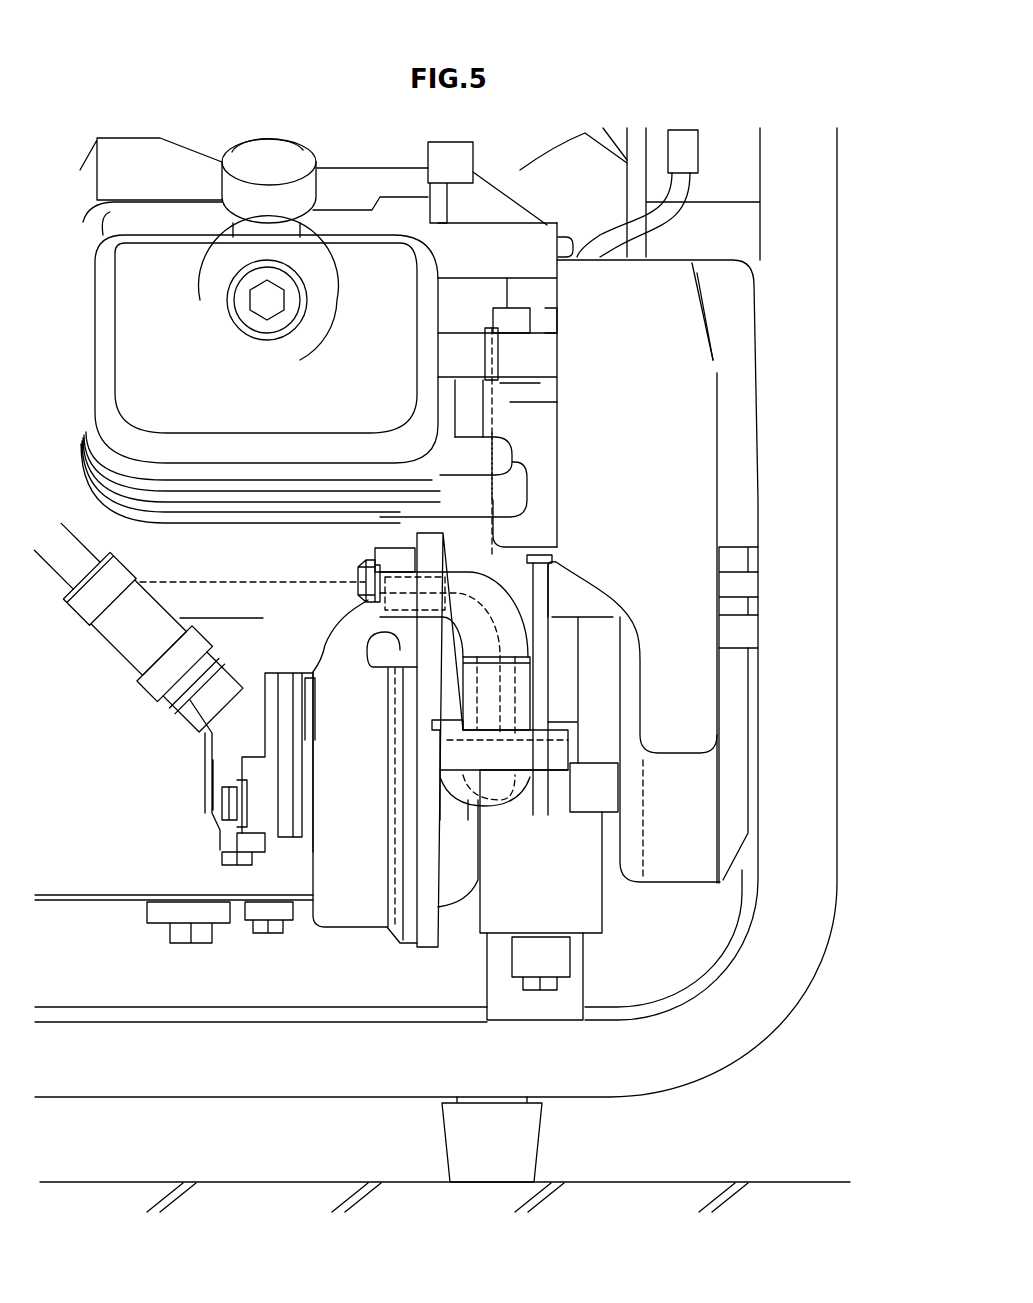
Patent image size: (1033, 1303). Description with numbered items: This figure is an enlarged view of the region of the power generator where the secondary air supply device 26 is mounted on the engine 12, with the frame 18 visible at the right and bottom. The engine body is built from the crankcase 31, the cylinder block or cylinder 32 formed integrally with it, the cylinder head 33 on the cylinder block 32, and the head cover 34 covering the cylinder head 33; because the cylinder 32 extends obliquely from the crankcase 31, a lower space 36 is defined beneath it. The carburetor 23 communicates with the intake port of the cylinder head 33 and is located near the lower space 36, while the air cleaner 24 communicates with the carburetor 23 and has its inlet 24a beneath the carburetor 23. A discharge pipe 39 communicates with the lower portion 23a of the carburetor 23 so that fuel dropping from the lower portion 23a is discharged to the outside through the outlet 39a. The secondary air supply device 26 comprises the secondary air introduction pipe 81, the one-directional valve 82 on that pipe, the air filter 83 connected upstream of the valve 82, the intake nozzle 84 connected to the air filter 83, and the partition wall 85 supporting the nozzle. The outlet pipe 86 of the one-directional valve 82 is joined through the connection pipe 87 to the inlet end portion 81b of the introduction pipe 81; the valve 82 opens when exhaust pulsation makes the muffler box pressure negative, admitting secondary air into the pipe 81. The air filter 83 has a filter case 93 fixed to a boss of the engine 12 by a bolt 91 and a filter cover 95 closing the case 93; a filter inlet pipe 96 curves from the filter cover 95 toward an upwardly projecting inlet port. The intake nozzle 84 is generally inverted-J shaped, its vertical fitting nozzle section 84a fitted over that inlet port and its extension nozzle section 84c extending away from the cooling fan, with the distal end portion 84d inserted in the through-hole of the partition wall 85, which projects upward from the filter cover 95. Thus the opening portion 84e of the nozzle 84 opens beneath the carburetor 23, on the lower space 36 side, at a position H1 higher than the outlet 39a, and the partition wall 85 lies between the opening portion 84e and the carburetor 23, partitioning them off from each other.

The engine 12 is at (716, 237).
The frame 18 is at (817, 587).
The carburetor 23 is at (545, 458).
The lower portion 23a is at (560, 545).
The air cleaner 24 is at (703, 778).
The inlet 24a is at (585, 802).
The secondary air supply device 26 is at (550, 622).
The crankcase 31 is at (240, 648).
The cylinder block 32 is at (257, 517).
The cylinder head 33 is at (447, 420).
The head cover 34 is at (363, 252).
The lower space 36 is at (235, 614).
The discharge pipe 39 is at (548, 650).
The outlet 39a is at (538, 820).
The secondary air introduction pipe 81 is at (78, 540).
The inlet end portion 81b is at (90, 552).
The one-directional valve 82 is at (288, 675).
The air filter 83 is at (303, 851).
The intake nozzle 84 is at (528, 596).
The fitting nozzle section 84a is at (525, 697).
The extension nozzle section 84c is at (480, 590).
The distal end portion 84d is at (397, 567).
The opening portion 84e is at (360, 573).
The partition wall 85 is at (430, 587).
The outlet pipe 86 is at (202, 733).
The connection pipe 87 is at (120, 643).
The bolt 91 is at (367, 600).
The filter case 93 is at (355, 900).
The filter cover 95 is at (455, 883).
The filter inlet pipe 96 is at (502, 790).
The position H1 is at (280, 582).